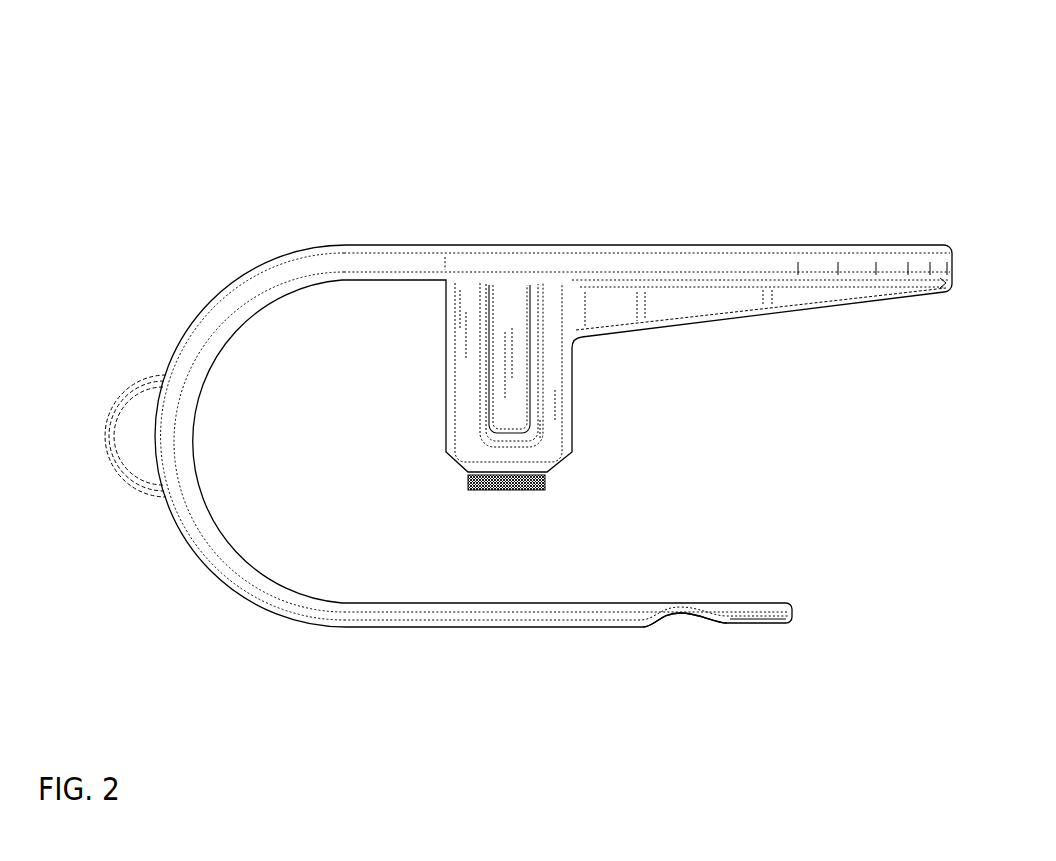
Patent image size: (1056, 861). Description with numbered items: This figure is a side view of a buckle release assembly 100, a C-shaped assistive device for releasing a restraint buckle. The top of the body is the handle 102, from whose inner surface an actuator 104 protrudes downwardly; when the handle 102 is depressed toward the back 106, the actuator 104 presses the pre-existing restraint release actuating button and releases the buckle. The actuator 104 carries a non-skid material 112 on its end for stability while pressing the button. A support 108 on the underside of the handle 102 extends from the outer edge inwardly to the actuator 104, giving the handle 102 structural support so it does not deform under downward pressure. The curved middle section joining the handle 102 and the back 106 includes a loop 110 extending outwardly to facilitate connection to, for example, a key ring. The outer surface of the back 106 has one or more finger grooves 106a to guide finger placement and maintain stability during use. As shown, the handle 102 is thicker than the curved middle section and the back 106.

The buckle release assembly 100 is at (106, 174).
The handle 102 is at (777, 210).
The actuator 104 is at (614, 372).
The back 106 is at (815, 655).
The finger grooves 106a is at (686, 645).
The support 108 is at (891, 313).
The loop 110 is at (85, 366).
The non-skid material 112 is at (576, 499).